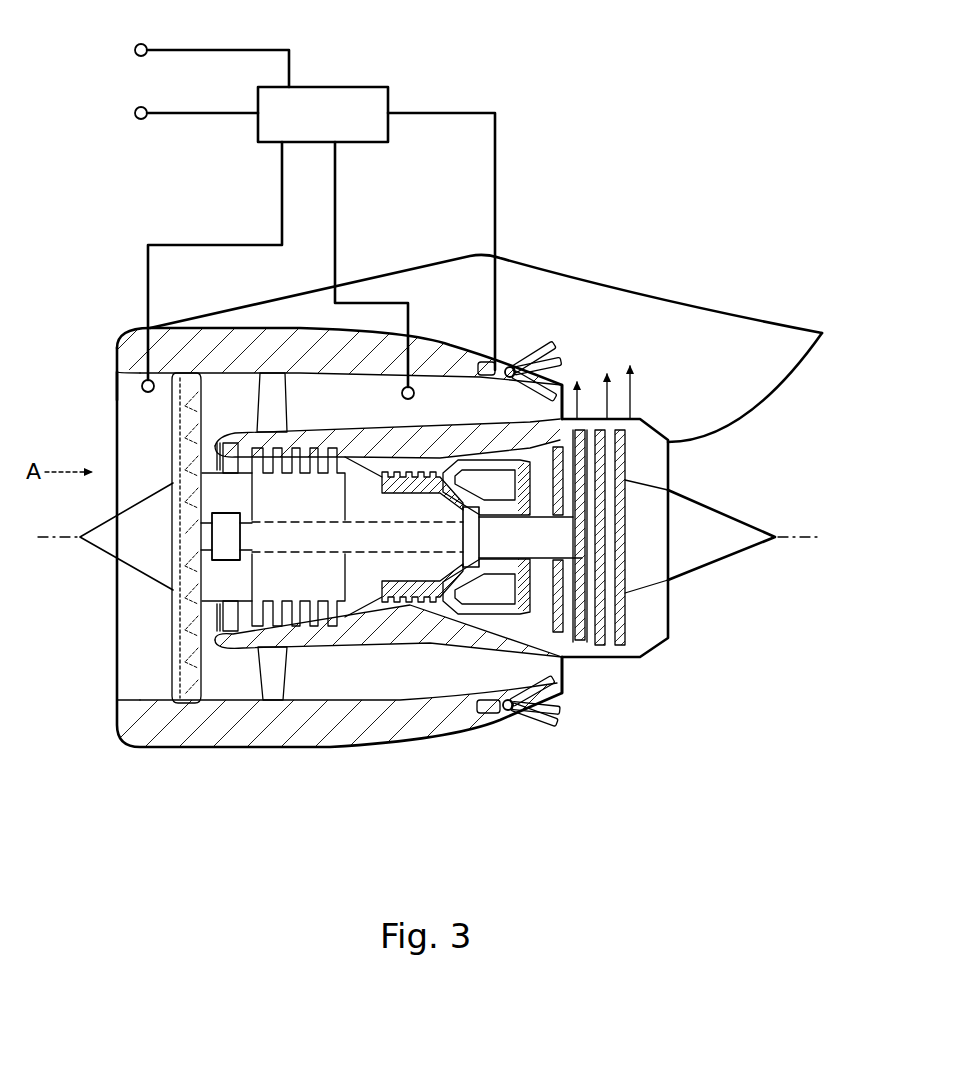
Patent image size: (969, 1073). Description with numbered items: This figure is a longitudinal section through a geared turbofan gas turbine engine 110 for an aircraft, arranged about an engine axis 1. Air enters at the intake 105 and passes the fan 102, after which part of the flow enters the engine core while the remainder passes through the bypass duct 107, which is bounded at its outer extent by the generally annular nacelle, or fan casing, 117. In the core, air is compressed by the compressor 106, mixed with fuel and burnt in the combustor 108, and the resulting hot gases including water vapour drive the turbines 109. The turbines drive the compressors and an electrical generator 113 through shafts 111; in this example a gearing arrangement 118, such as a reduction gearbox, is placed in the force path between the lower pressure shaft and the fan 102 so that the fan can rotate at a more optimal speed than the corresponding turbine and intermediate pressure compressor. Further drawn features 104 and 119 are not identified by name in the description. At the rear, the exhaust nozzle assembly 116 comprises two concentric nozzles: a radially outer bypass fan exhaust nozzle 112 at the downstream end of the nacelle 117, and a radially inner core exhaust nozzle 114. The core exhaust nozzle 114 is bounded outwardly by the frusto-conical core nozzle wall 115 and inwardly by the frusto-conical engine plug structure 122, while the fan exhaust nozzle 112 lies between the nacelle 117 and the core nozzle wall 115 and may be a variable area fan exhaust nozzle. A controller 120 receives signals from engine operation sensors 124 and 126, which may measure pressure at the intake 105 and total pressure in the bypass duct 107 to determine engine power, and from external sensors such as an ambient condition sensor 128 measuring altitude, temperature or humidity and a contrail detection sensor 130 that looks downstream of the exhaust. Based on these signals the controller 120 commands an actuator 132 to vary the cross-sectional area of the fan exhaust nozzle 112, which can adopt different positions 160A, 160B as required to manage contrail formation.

The engine axis 1 is at (68, 548).
The fan 102 is at (173, 460).
The low pressure compressor 104 is at (310, 646).
The intake 105 is at (127, 415).
The compressor 106 is at (395, 605).
The bypass duct 107 is at (245, 408).
The combustor 108 is at (493, 608).
The turbines 109 is at (610, 468).
The turbofan gas turbine engine 110 is at (101, 693).
The shafts 111 is at (433, 528).
The fan exhaust nozzle 112 is at (565, 692).
The electrical generator 113 is at (462, 545).
The core exhaust nozzle 114 is at (673, 442).
The core nozzle wall 115 is at (640, 418).
The exhaust nozzle assembly 116 is at (568, 672).
The nacelle 117 is at (478, 360).
The gearing arrangement 118 is at (217, 527).
The lower strut 119 is at (270, 682).
The controller 120 is at (321, 237).
The engine plug structure 122 is at (757, 506).
The engine operation sensor 124 is at (143, 382).
The engine operation sensor 126 is at (414, 396).
The ambient condition sensor 128 is at (135, 48).
The contrail detection sensor 130 is at (135, 110).
The actuator 132 is at (553, 343).
The nozzle position 160A is at (543, 713).
The nozzle position 160B is at (550, 727).